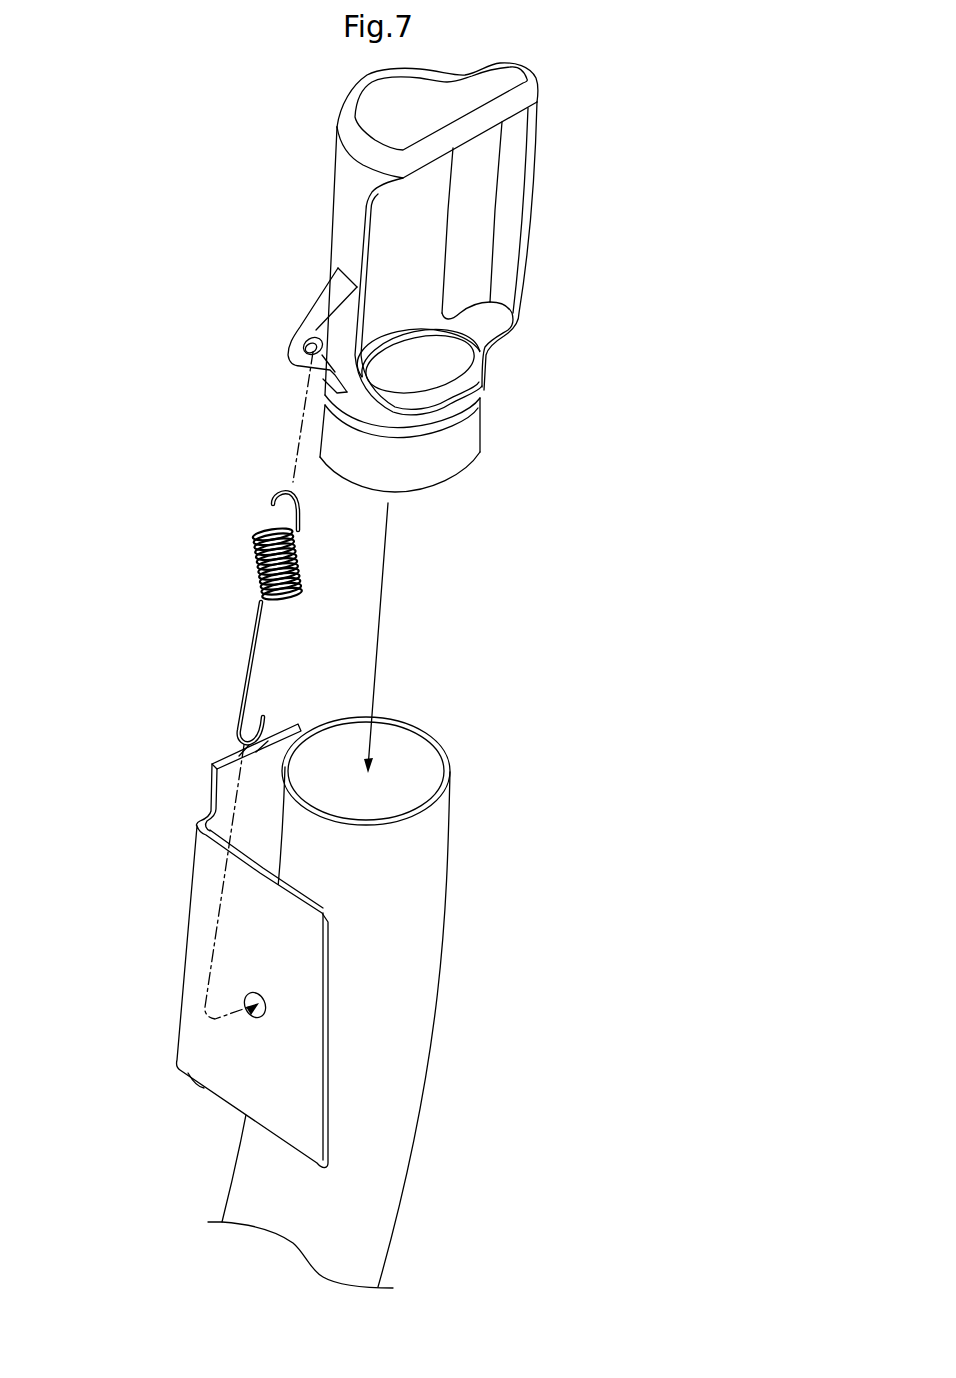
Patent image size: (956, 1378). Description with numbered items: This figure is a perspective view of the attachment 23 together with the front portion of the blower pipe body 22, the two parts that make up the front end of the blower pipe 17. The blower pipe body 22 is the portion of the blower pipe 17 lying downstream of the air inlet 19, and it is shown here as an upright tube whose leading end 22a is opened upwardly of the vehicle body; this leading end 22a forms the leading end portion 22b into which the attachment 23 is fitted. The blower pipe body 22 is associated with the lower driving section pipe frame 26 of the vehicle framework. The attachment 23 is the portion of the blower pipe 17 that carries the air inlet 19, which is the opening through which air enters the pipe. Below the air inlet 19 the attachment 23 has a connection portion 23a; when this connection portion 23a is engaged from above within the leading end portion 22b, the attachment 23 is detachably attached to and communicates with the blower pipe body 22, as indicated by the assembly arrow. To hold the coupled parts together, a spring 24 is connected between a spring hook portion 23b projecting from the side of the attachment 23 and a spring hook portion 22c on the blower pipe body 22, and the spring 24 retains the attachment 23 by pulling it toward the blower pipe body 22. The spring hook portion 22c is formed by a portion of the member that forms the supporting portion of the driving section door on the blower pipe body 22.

The blower pipe 17 is at (373, 675).
The air inlet 19 is at (480, 215).
The blower pipe body 22 is at (328, 992).
The leading end 22a is at (440, 748).
The leading end portion 22b is at (427, 846).
The spring hook portion 22c is at (202, 944).
The attachment 23 is at (417, 277).
The connection portion 23a is at (462, 443).
The spring hook portion 23b is at (308, 336).
The spring 24 is at (257, 563).
The lower driving section pipe frame 26 is at (396, 992).